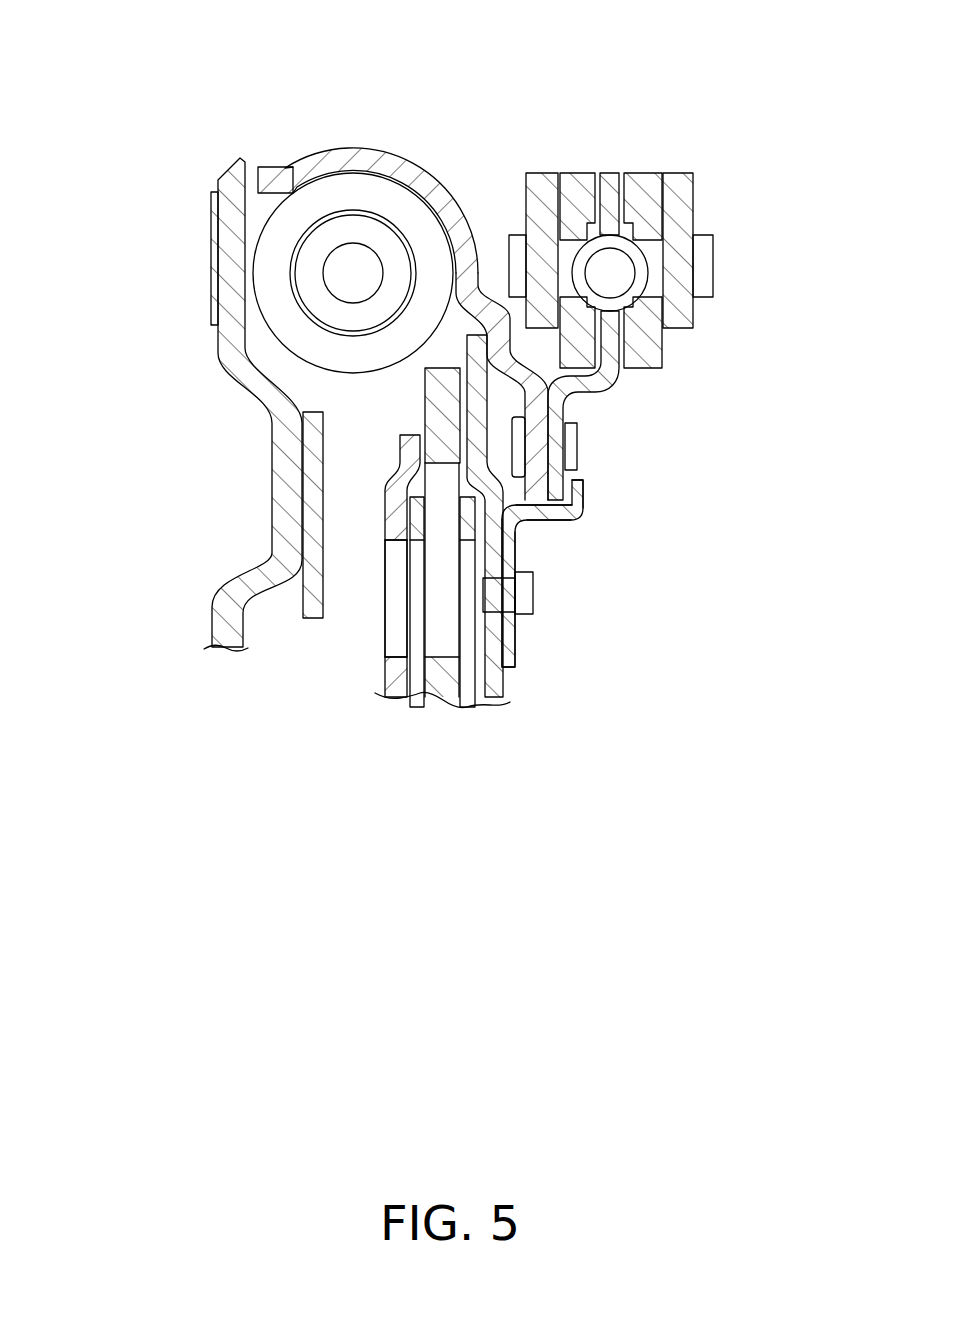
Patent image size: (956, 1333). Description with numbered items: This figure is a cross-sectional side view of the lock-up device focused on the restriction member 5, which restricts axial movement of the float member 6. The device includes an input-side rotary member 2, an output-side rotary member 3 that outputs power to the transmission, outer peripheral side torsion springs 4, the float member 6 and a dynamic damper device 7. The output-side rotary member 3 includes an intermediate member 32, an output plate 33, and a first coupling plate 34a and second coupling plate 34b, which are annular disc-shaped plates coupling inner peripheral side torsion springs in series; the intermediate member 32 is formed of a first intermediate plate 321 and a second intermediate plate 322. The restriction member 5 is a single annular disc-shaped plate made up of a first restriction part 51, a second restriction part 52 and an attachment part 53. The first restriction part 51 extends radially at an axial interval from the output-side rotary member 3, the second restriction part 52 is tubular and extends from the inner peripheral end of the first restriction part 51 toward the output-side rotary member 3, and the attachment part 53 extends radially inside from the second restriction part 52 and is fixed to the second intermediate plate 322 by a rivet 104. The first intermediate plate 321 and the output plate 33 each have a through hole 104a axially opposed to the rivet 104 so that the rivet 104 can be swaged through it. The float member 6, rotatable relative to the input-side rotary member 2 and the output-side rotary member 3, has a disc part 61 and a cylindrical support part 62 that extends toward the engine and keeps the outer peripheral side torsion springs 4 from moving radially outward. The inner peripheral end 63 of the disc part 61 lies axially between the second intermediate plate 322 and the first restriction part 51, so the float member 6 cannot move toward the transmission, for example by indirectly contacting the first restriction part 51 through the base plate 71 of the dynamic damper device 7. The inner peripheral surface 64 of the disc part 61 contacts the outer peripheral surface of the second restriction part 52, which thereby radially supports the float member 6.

The input-side rotary member 2 is at (259, 497).
The output-side rotary member 3 is at (445, 616).
The outer peripheral side torsion springs 4 is at (325, 177).
The restriction member 5 is at (622, 573).
The float member 6 is at (403, 256).
The dynamic damper device 7 is at (652, 334).
The intermediate member 32 is at (483, 563).
The output plate 33 is at (445, 690).
The first coupling plate 34a is at (415, 697).
The second coupling plate 34b is at (470, 698).
The first restriction part 51 is at (583, 492).
The second restriction part 52 is at (552, 521).
The attachment part 53 is at (515, 641).
The disc part 61 is at (483, 257).
The support part 62 is at (367, 157).
The inner peripheral end 63 is at (580, 480).
The inner peripheral surface 64 is at (512, 506).
The base plate 71 is at (605, 398).
The rivet 104 is at (544, 602).
The through hole 104a is at (395, 657).
The first intermediate plate 321 is at (397, 690).
The second intermediate plate 322 is at (477, 700).